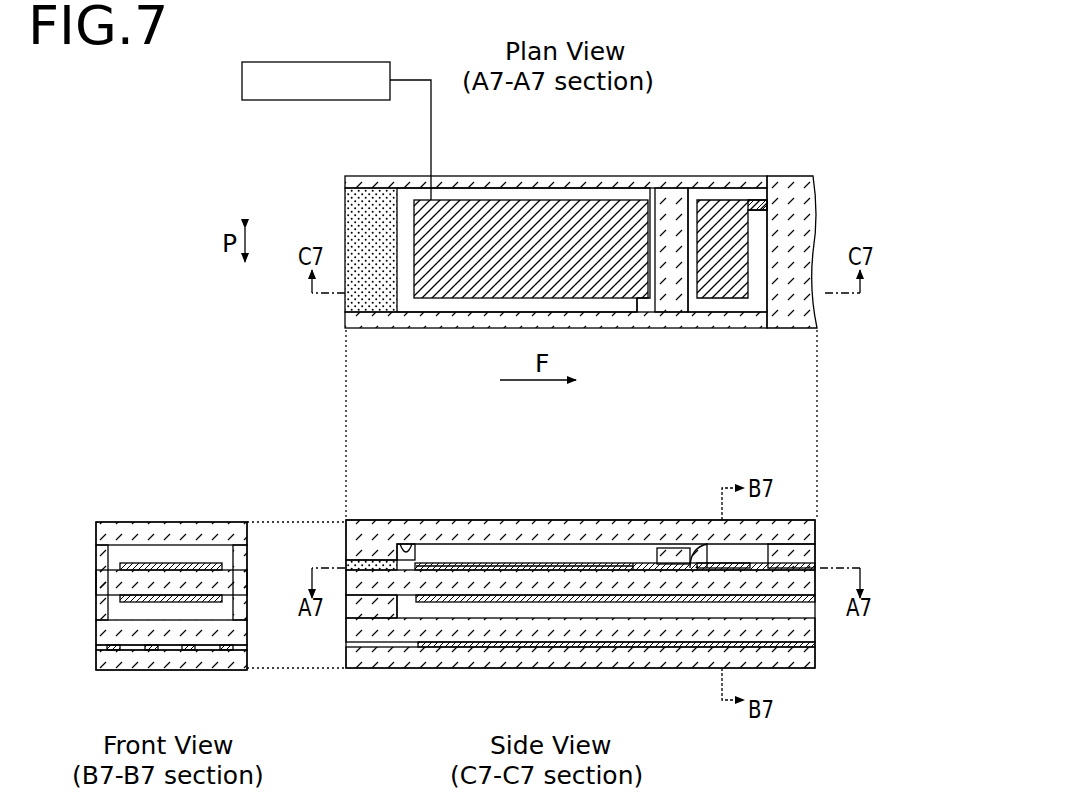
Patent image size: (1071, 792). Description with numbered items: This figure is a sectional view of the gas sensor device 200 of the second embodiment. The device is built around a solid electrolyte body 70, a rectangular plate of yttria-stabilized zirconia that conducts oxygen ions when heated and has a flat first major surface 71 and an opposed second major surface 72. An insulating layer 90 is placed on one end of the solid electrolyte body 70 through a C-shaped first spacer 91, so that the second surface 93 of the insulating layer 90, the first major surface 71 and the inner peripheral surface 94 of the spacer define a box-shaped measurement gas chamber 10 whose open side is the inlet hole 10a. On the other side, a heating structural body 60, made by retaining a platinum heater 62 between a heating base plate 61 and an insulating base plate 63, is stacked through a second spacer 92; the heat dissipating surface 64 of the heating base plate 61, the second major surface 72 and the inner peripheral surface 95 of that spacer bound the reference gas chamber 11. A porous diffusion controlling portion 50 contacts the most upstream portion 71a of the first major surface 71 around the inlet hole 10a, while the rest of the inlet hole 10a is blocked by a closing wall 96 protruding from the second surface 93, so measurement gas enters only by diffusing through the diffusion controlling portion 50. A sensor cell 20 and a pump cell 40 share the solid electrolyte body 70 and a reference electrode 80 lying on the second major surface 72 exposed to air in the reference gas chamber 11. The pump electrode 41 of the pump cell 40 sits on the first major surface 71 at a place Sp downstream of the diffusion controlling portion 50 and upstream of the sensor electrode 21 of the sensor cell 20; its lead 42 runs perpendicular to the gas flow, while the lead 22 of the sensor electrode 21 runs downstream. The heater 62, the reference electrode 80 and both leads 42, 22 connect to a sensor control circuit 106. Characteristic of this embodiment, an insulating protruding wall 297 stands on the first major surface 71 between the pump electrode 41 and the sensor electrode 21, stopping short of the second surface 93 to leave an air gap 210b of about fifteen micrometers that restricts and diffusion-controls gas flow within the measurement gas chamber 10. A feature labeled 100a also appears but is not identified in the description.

The sensor control circuit 106 is at (345, 62).
The gas sensor device 200 is at (298, 212).
The first end portion 100a is at (360, 202).
The diffusion controlling portion 50 is at (367, 205).
The pump electrode 41 is at (458, 210).
The place Sp is at (524, 196).
The inner peripheral surface 94 is at (583, 188).
The protruding wall 297 is at (665, 205).
The first major surface 71 is at (712, 200).
The lead 22 is at (756, 200).
The first spacer 91 is at (803, 188).
The measurement gas chamber 10 is at (442, 312).
The inlet hole 10a is at (350, 313).
The lead 42 is at (640, 305).
The sensor cell 20 is at (708, 302).
The sensor electrode 21 is at (728, 300).
The pump cell 40 is at (555, 472).
The solid electrolyte body 70 is at (510, 565).
The reference electrode 80 is at (548, 567).
The insulating layer 90 is at (815, 536).
The second surface 93 is at (407, 545).
The closing wall 96 is at (405, 552).
The reference gas chamber 11 is at (412, 650).
The heat dissipating surface 64 is at (456, 602).
The second spacer 92 is at (373, 653).
The most upstream portion 71a is at (387, 640).
The heating base plate 61 is at (815, 626).
The inner peripheral surface 95 is at (507, 647).
The insulating base plate 63 is at (558, 660).
The heater 62 is at (805, 668).
The second major surface 72 is at (625, 650).
The air gap 210b is at (725, 660).
The heating structural body 60 is at (340, 650).